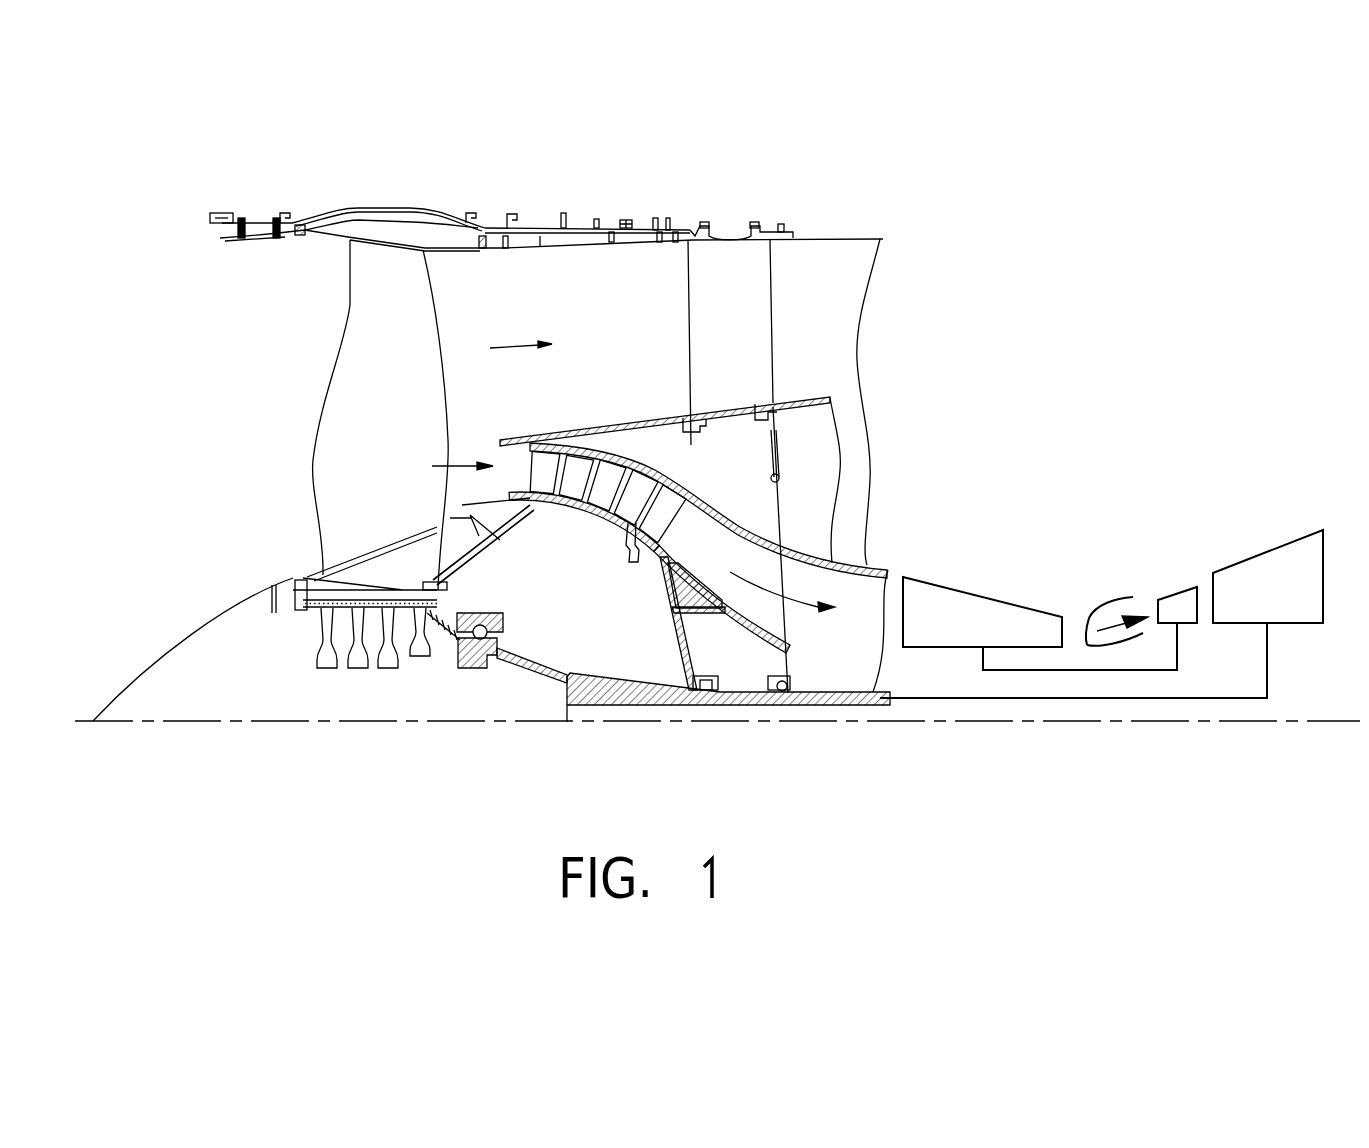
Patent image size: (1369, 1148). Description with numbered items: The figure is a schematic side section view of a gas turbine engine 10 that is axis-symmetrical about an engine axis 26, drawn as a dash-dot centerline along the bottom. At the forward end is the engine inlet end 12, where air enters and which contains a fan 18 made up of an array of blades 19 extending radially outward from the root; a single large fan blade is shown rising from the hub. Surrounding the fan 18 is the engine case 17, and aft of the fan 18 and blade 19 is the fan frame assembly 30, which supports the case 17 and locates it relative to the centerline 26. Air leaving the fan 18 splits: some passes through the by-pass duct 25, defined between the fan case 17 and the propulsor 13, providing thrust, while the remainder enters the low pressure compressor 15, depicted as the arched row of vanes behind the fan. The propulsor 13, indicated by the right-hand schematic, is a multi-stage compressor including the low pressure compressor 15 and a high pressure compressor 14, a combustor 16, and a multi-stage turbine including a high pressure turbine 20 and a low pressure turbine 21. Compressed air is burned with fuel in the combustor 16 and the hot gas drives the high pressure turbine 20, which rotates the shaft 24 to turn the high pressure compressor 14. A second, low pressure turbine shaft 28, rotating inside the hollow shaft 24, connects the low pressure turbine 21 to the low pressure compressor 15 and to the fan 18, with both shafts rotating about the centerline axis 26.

The gas turbine engine 10 is at (1132, 147).
The engine inlet end 12 is at (192, 283).
The propulsor 13 is at (1128, 455).
The high pressure compressor 14 is at (983, 597).
The low pressure compressor 15 is at (572, 543).
The combustor 16 is at (1113, 600).
The engine case 17 is at (353, 210).
The fan 18 is at (295, 330).
The blades 19 is at (381, 391).
The high pressure turbine 20 is at (1167, 590).
The low pressure turbine 21 is at (1267, 550).
The shaft 24 is at (1080, 670).
The by-pass duct 25 is at (599, 297).
The engine axis 26 is at (1240, 723).
The low pressure turbine shaft 28 is at (1078, 700).
The fan frame assembly 30 is at (707, 204).